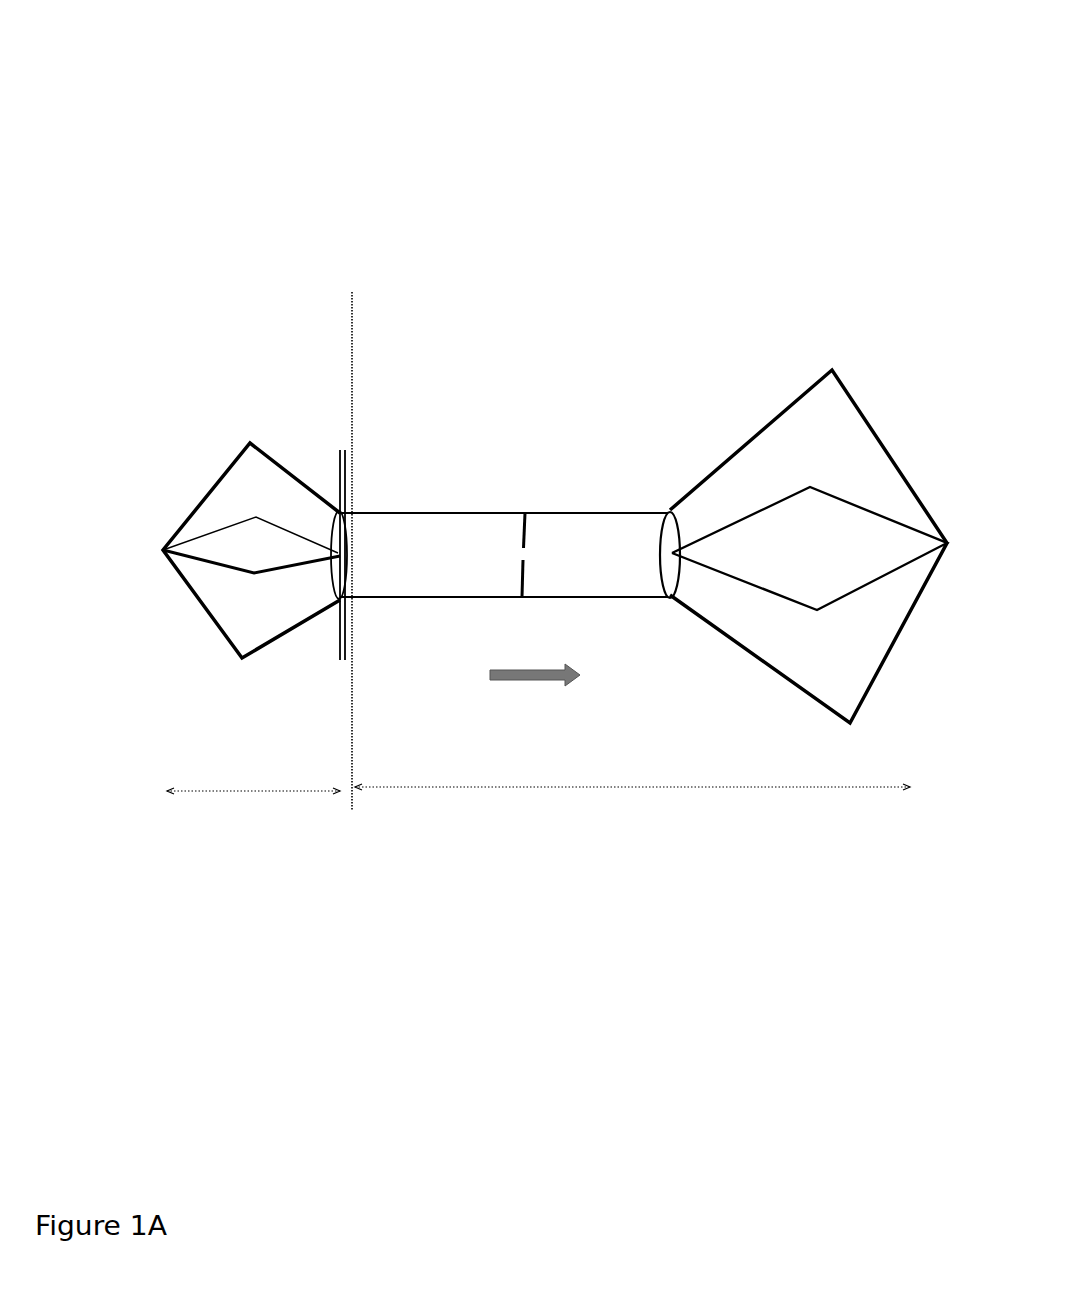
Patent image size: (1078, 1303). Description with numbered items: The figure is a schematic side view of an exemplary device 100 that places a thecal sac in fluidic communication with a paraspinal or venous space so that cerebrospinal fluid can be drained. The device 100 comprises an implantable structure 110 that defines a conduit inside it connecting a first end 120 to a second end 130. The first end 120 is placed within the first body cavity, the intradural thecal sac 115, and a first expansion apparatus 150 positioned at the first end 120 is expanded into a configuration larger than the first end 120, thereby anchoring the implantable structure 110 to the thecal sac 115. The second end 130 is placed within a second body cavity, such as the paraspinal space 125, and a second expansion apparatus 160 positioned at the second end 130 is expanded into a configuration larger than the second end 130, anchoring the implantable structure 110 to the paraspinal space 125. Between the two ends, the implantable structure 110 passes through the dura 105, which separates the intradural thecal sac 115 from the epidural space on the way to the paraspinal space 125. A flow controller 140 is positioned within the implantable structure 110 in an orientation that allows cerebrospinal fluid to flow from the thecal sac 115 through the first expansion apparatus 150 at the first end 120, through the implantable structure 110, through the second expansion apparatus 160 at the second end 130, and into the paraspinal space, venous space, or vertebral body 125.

The device 100 is at (198, 92).
The dura 105 is at (344, 252).
The implantable structure 110 is at (464, 617).
The thecal sac 115 is at (235, 318).
The first end 120 is at (322, 625).
The paraspinal space 125 is at (713, 305).
The second end 130 is at (672, 615).
The flow controller 140 is at (515, 478).
The first expansion apparatus 150 is at (165, 535).
The second expansion apparatus 160 is at (878, 428).